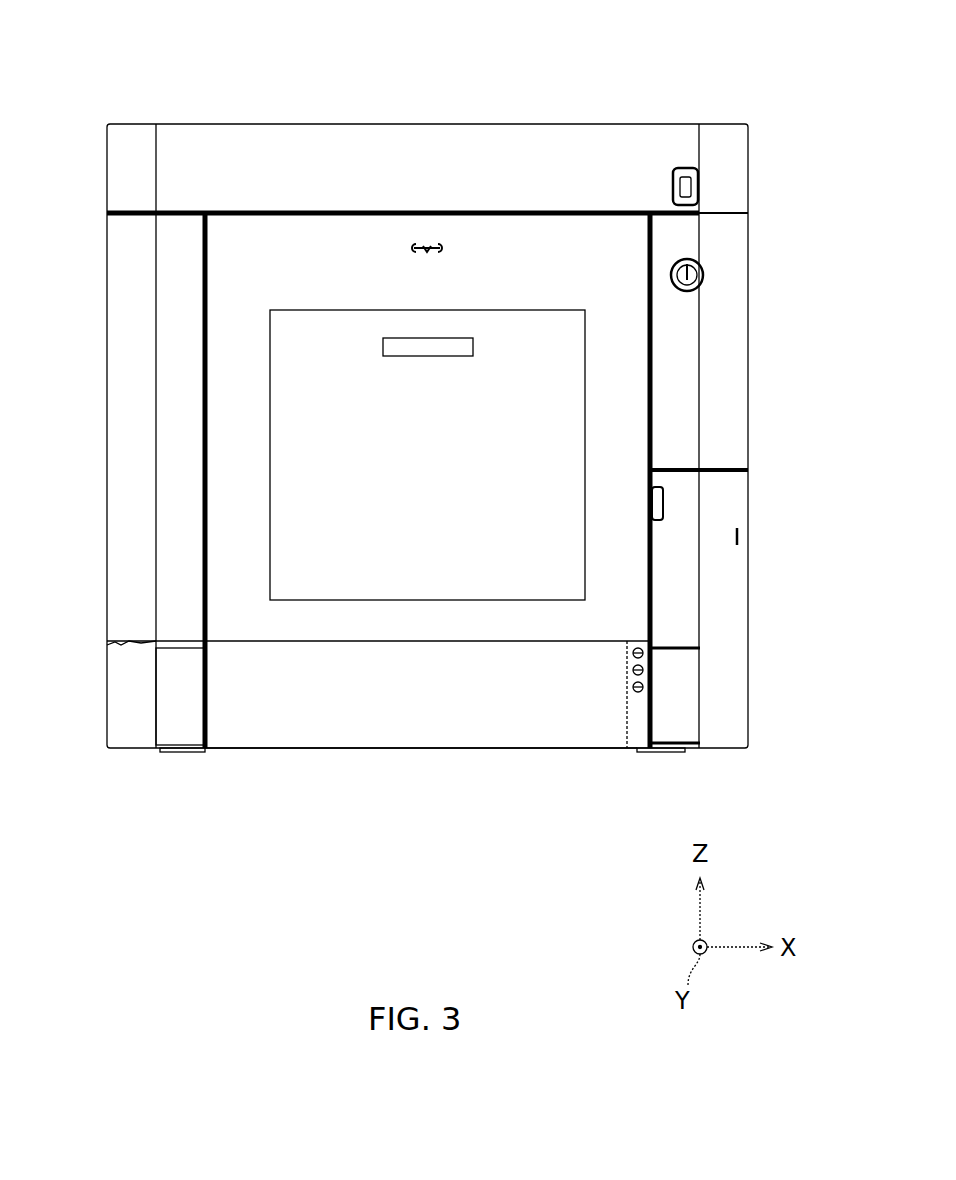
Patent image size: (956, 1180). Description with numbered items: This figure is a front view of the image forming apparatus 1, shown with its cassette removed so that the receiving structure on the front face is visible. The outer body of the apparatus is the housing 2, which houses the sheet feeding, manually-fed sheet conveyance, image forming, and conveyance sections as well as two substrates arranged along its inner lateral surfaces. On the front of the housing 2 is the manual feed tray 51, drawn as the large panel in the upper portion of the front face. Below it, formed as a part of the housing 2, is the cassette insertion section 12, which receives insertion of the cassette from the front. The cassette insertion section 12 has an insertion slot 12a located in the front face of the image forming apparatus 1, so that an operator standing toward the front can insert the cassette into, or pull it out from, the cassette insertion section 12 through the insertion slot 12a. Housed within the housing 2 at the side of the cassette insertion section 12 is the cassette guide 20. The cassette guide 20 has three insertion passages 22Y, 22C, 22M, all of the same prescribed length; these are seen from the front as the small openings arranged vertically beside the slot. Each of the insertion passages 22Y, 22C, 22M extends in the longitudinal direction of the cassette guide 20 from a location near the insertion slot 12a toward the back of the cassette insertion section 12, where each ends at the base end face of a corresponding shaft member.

The image forming apparatus 1 is at (550, 98).
The housing 2 is at (106, 268).
The manual feed tray 51 is at (288, 407).
The cassette insertion section 12 is at (272, 688).
The insertion slot 12a is at (408, 727).
The cassette guide 20 is at (627, 728).
The insertion passage 22M is at (644, 652).
The insertion passage 22C is at (644, 670).
The insertion passage 22Y is at (644, 688).